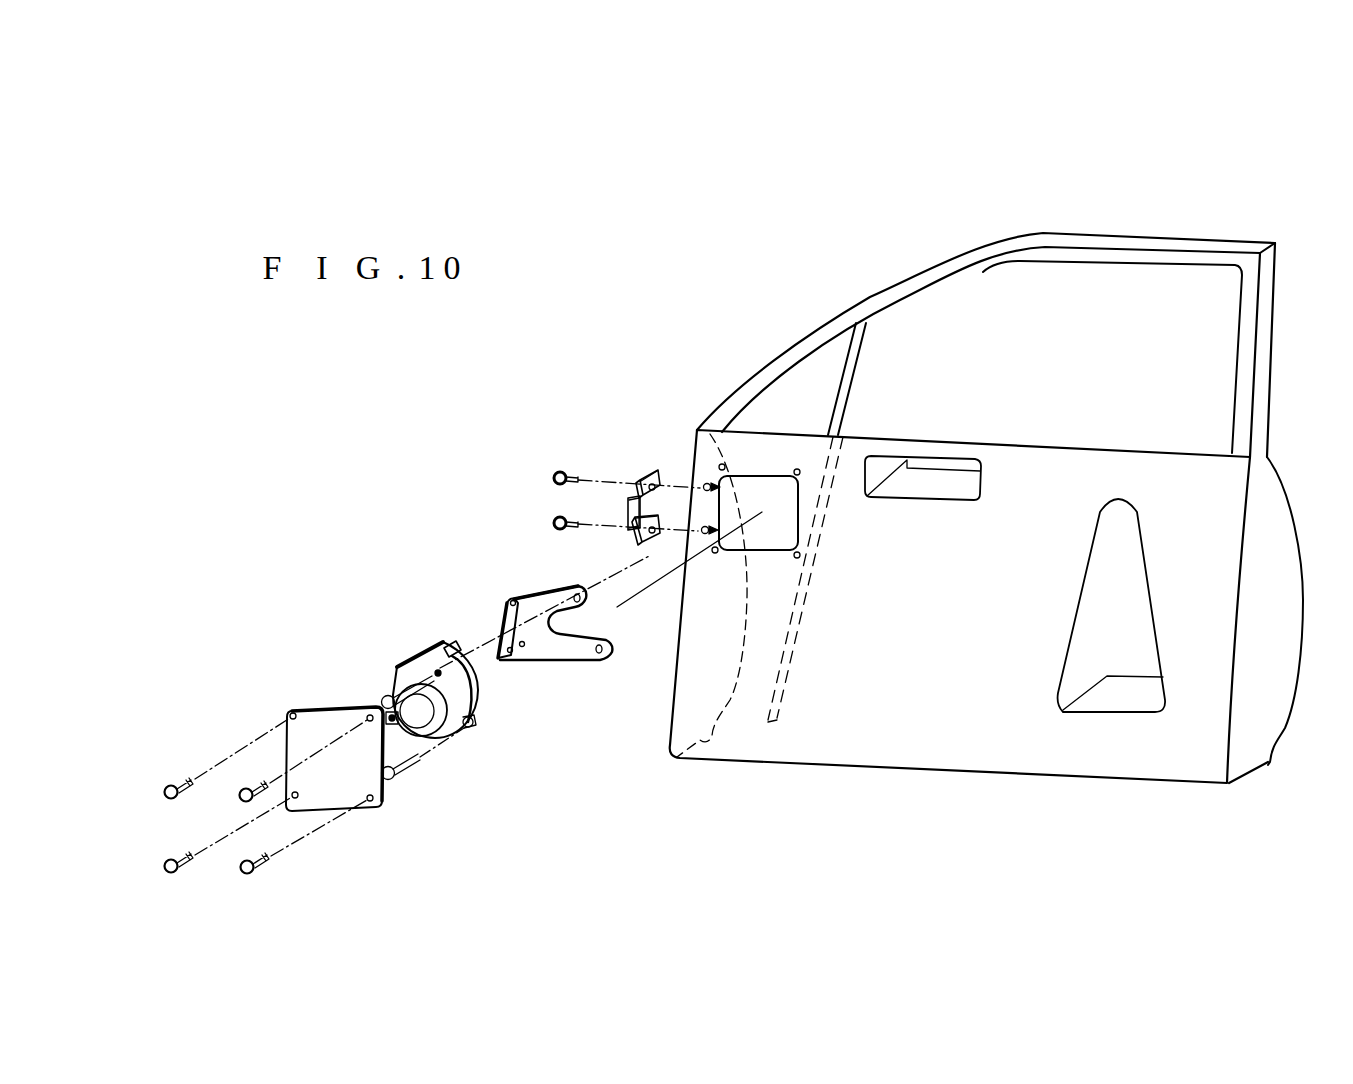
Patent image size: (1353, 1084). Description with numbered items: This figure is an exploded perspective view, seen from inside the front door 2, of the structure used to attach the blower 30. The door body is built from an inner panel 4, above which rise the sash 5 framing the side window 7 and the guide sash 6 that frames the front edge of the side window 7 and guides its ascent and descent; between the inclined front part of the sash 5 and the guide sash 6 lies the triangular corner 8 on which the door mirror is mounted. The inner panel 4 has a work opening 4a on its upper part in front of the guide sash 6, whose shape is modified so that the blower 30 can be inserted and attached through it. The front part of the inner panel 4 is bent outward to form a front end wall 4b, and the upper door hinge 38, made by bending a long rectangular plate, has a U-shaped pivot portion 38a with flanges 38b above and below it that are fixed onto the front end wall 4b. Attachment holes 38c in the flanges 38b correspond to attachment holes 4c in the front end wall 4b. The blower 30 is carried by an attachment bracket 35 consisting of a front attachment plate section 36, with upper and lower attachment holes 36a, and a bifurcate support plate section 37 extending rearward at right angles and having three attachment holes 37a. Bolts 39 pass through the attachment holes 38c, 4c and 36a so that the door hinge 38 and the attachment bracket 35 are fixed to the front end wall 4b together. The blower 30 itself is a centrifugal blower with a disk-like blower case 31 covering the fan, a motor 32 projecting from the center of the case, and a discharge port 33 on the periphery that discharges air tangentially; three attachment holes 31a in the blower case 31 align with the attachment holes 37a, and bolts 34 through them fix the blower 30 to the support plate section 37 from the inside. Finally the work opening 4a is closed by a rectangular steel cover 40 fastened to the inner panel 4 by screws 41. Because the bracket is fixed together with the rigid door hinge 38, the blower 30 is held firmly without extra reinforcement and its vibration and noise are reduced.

The front door 2 is at (924, 246).
The inner panel 4 is at (930, 704).
The work opening 4a is at (770, 540).
The front end wall 4b is at (695, 687).
The attachment holes 4c is at (714, 488).
The sash 5 is at (1058, 242).
The guide sash 6 is at (838, 482).
The side window 7 is at (1193, 333).
The triangular corner 8 is at (800, 390).
The blower 30 is at (403, 645).
The blower case 31 is at (445, 725).
The attachment holes 31a is at (432, 672).
The motor 32 is at (425, 722).
The discharge port 33 is at (445, 642).
The bolts 34 is at (384, 702).
The attachment bracket 35 is at (500, 588).
The attachment plate section 36 is at (505, 623).
The attachment holes 36a is at (514, 592).
The support plate section 37 is at (565, 662).
The attachment holes 37a is at (530, 652).
The door hinge 38 is at (630, 472).
The pivot portion 38a is at (629, 508).
The flanges 38b is at (648, 470).
The attachment holes 38c is at (657, 482).
The bolts 39 is at (556, 474).
The cover 40 is at (338, 788).
The screws 41 is at (171, 785).